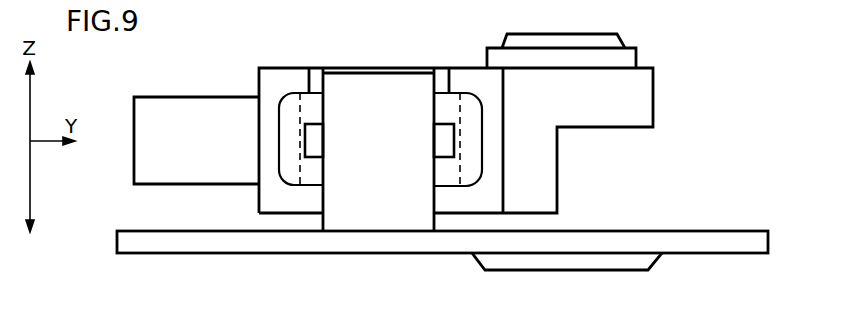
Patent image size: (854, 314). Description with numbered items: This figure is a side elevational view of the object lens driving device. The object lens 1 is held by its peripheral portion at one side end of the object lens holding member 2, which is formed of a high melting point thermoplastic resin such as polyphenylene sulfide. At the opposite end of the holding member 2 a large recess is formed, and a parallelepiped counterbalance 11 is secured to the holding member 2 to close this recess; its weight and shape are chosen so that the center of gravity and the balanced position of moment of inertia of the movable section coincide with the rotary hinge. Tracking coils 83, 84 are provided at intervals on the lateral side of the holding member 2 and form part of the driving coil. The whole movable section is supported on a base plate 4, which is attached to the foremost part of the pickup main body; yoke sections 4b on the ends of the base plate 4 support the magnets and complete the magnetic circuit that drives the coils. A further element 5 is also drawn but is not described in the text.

The object lens 1 is at (628, 47).
The object lens holding member 2 is at (283, 64).
The base plate 4 is at (690, 230).
The yoke section 4b is at (382, 84).
The coil 5 is at (305, 143).
The counterbalance 11 is at (146, 154).
The tracking coil 83 is at (317, 182).
The tracking coil 84 is at (448, 173).